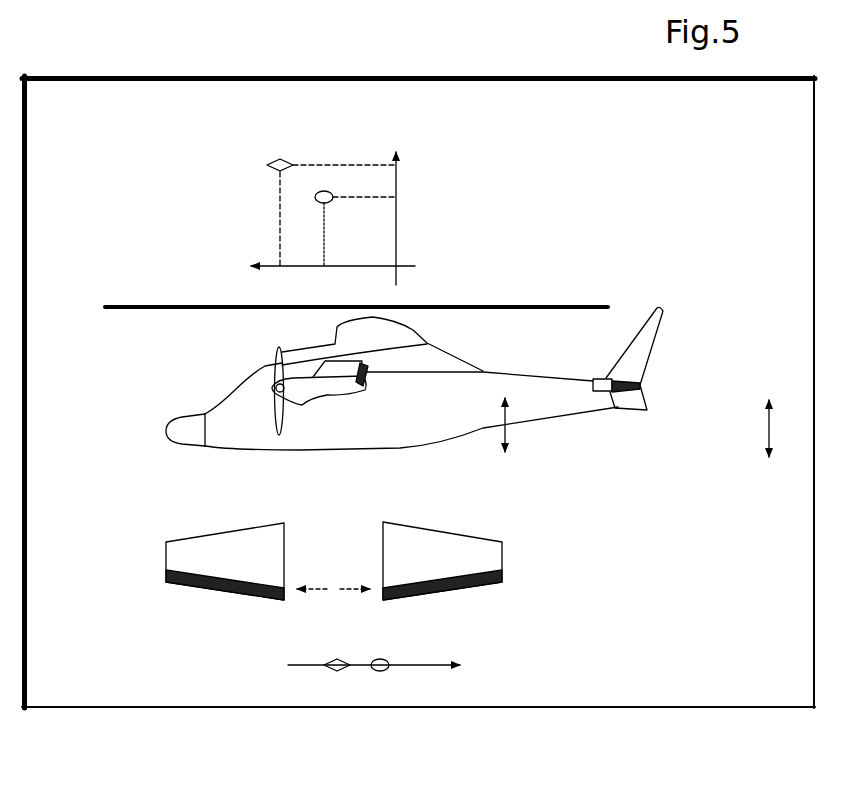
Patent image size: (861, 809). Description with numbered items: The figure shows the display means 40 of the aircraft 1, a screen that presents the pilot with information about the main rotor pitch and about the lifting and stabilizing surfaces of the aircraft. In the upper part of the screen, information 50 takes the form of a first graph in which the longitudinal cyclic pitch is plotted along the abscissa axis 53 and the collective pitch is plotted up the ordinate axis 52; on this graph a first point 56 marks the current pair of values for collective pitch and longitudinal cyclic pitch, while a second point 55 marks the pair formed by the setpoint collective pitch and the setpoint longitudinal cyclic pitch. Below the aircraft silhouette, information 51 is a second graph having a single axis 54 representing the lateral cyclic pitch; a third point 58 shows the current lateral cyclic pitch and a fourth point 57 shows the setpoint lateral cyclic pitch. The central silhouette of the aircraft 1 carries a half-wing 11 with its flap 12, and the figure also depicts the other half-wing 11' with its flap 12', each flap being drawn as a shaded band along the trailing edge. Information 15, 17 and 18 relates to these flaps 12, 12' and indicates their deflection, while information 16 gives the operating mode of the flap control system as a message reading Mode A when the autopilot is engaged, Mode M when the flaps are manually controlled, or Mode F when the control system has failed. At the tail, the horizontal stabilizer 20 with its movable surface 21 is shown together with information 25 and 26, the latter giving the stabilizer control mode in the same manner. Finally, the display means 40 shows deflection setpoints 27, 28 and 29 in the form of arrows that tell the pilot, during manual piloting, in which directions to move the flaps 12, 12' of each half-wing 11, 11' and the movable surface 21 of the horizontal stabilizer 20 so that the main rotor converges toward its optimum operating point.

The aircraft 1 is at (146, 443).
The half-wing 11 is at (233, 460).
The half-wing 11' is at (478, 561).
The flap 12 is at (302, 465).
The flap 12' is at (460, 592).
The flap information 15 is at (412, 394).
The operating mode information 16 is at (412, 424).
The flap information 17 is at (220, 620).
The flap information 18 is at (395, 621).
The horizontal stabilizer 20 is at (600, 379).
The movable surface 21 is at (632, 381).
The horizontal stabilizer information 25 is at (702, 388).
The horizontal stabilizer information 26 is at (678, 444).
The deflection setpoint 27 is at (514, 407).
The deflection setpoint 28 is at (778, 444).
The deflection setpoint 29 is at (330, 580).
The display means 40 is at (592, 719).
The collective and longitudinal cyclic pitch information 50 is at (316, 208).
The lateral cyclic pitch information 51 is at (387, 715).
The ordinate axis 52 is at (397, 227).
The abscissa axis 53 is at (265, 265).
The single axis 54 is at (303, 665).
The second point 55 is at (278, 162).
The first point 56 is at (325, 192).
The fourth point 57 is at (340, 672).
The third point 58 is at (383, 672).